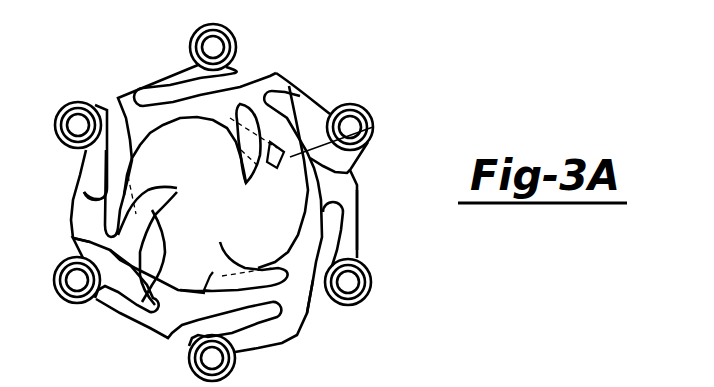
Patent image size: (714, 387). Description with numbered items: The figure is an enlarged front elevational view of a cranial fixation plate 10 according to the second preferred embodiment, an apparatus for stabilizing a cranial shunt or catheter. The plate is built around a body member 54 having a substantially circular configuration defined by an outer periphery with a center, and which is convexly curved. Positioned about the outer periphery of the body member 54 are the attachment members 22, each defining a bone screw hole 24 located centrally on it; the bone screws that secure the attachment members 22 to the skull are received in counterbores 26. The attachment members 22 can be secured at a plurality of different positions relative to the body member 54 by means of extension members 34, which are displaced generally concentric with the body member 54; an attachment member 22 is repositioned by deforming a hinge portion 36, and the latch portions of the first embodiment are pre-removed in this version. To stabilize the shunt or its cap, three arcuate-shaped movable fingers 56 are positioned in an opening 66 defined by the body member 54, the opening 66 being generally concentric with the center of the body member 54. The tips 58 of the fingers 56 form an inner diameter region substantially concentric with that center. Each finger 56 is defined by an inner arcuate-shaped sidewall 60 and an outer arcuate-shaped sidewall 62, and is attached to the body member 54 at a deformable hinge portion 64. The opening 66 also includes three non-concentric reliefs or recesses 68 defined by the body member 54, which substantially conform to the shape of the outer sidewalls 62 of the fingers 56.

The cranial fixation plate 10 is at (272, 44).
The attachment member 22 is at (368, 268).
The bone screw hole 24 is at (347, 284).
The counterbore 26 is at (360, 287).
The extension member 34 is at (345, 230).
The hinge portion 36 is at (347, 198).
The body member 54 is at (298, 300).
The arcuate-shaped movable finger 56 is at (145, 207).
The tip 58 is at (233, 250).
The inner arcuate-shaped sidewall 60 is at (153, 288).
The outer arcuate-shaped sidewall 62 is at (143, 188).
The deformable hinge portion 64 is at (230, 118).
The opening 66 is at (177, 140).
The recess 68 is at (333, 152).